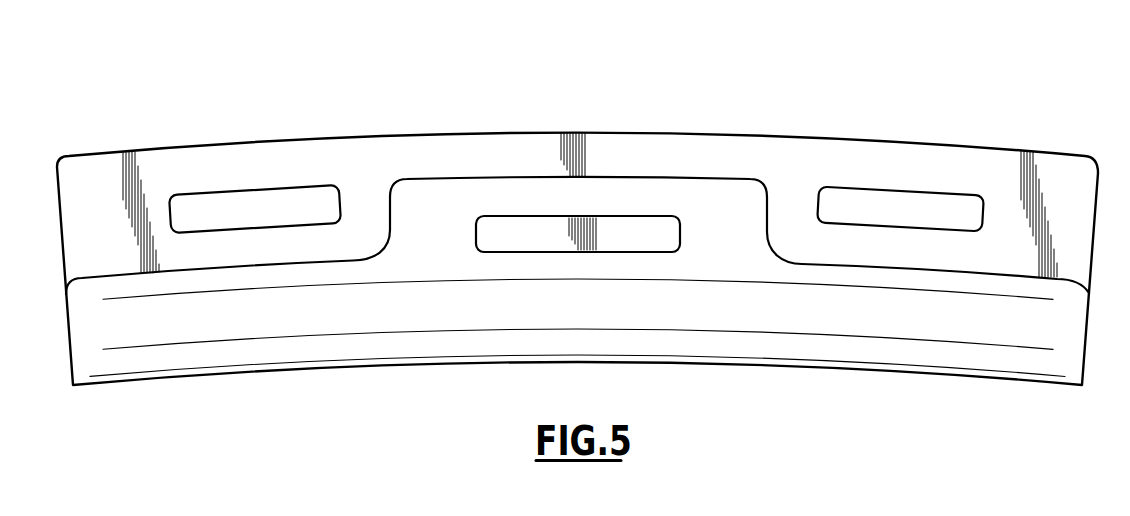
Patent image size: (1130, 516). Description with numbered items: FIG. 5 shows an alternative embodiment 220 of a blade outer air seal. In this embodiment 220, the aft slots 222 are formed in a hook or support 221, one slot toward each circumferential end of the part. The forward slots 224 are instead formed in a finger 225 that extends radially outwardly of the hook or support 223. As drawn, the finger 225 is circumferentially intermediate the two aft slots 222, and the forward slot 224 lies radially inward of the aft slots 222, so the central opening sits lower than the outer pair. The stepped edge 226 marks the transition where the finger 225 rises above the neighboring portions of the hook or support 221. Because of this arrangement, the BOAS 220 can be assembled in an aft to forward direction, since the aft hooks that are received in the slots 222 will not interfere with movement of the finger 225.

The alternative embodiment 220 is at (116, 96).
The hook or support 221 is at (385, 155).
The aft slots 222 is at (244, 205).
The hook or support 223 is at (806, 282).
The forward slots 224 is at (527, 232).
The finger 225 is at (657, 202).
The stepped transition edge 226 is at (485, 177).